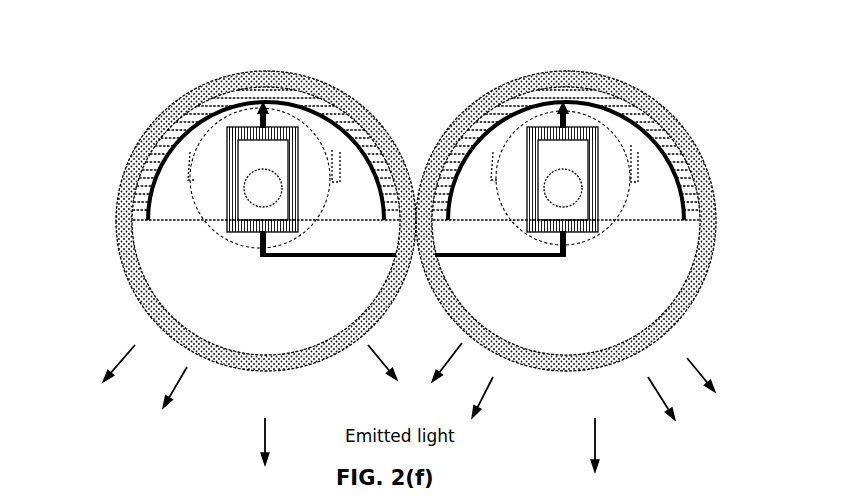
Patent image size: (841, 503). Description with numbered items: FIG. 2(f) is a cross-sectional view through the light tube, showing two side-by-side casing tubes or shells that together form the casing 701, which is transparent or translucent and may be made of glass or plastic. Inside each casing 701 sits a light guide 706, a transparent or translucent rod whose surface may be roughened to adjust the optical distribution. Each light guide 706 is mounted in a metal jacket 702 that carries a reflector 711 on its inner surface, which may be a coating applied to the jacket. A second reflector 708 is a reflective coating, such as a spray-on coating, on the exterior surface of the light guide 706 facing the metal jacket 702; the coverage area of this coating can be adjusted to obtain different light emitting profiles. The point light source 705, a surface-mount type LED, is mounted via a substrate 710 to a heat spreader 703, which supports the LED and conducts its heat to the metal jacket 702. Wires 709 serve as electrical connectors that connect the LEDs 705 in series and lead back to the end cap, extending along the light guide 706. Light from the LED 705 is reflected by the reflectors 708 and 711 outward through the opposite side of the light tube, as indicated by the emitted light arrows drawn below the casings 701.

The casing 701 is at (134, 318).
The metal jacket 702 is at (177, 135).
The heat spreader 703 is at (177, 203).
The point light source 705 is at (263, 239).
The light guide 706 is at (309, 232).
The reflector 708 is at (272, 102).
The wires 709 is at (249, 122).
The substrate 710 is at (215, 184).
The reflector 711 is at (318, 103).